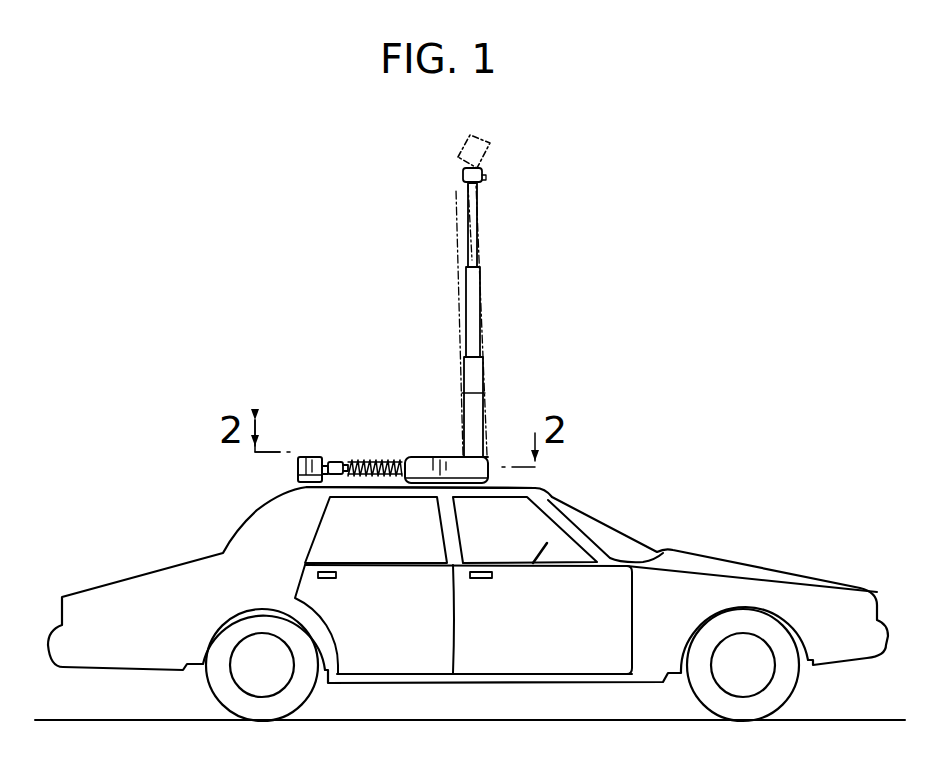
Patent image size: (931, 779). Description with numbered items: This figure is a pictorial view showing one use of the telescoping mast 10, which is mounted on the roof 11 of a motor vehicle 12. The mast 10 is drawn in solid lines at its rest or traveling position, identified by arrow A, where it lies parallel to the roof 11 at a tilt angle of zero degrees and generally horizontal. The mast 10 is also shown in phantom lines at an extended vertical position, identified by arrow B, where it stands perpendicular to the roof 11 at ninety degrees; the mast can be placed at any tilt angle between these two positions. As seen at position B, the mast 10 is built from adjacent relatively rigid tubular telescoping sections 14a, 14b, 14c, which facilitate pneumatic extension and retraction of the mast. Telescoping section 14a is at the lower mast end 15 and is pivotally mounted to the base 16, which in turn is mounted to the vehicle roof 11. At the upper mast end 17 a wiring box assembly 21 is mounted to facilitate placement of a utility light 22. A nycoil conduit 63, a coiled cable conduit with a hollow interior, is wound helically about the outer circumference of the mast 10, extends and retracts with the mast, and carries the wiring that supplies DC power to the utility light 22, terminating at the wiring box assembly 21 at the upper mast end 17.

The telescoping mast 10 is at (545, 397).
The roof 11 is at (527, 488).
The motor vehicle 12 is at (700, 545).
The telescoping section 14a is at (466, 367).
The telescoping section 14b is at (468, 320).
The telescoping section 14c is at (467, 243).
The lower mast end 15 is at (481, 455).
The base 16 is at (427, 452).
The upper mast end 17 is at (483, 185).
The wiring box assembly 21 is at (463, 175).
The utility light 22 is at (492, 142).
The nycoil conduit 63 is at (478, 247).
The traveling position A is at (370, 452).
The extended vertical position B is at (493, 310).